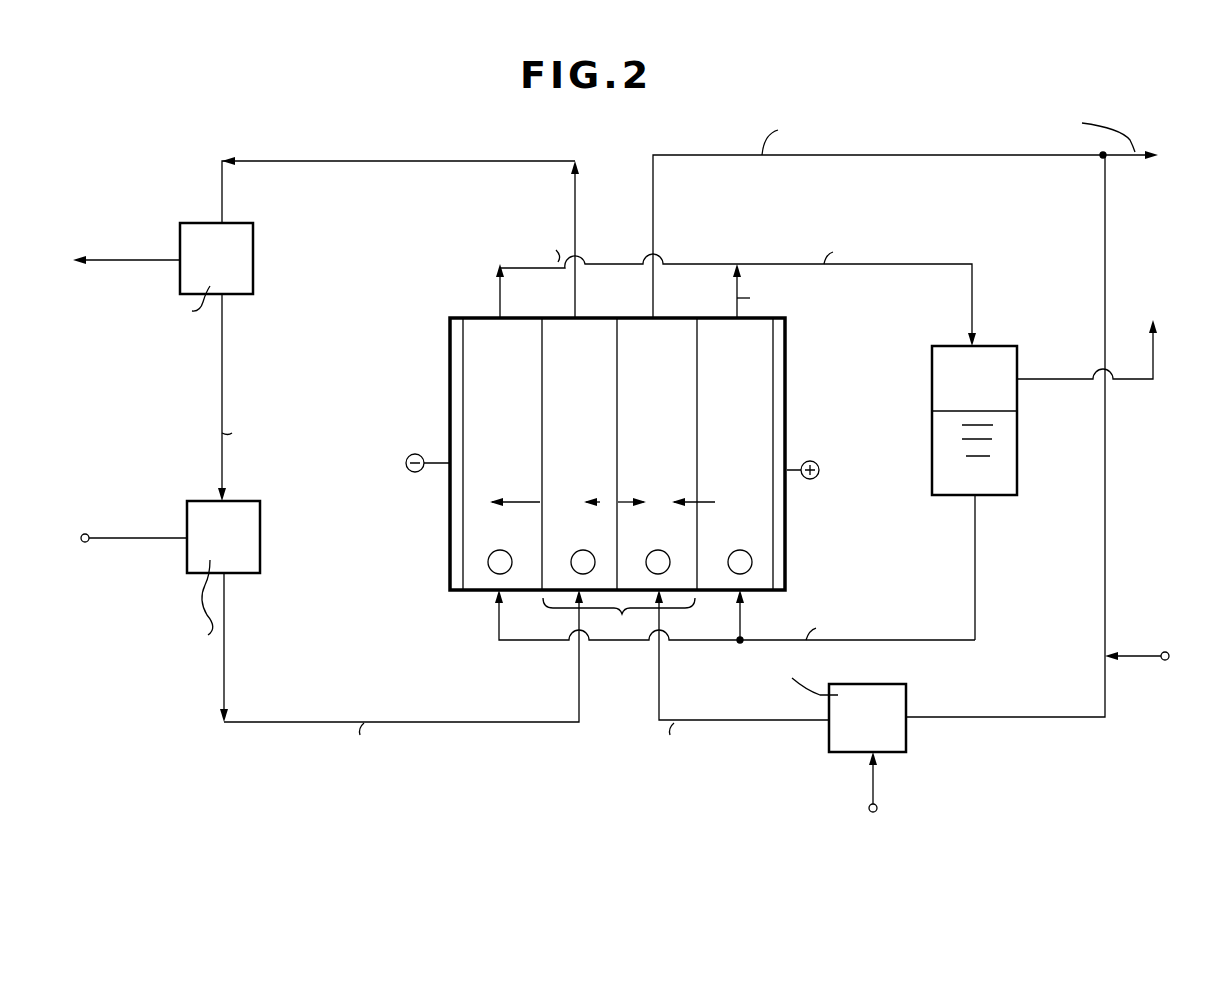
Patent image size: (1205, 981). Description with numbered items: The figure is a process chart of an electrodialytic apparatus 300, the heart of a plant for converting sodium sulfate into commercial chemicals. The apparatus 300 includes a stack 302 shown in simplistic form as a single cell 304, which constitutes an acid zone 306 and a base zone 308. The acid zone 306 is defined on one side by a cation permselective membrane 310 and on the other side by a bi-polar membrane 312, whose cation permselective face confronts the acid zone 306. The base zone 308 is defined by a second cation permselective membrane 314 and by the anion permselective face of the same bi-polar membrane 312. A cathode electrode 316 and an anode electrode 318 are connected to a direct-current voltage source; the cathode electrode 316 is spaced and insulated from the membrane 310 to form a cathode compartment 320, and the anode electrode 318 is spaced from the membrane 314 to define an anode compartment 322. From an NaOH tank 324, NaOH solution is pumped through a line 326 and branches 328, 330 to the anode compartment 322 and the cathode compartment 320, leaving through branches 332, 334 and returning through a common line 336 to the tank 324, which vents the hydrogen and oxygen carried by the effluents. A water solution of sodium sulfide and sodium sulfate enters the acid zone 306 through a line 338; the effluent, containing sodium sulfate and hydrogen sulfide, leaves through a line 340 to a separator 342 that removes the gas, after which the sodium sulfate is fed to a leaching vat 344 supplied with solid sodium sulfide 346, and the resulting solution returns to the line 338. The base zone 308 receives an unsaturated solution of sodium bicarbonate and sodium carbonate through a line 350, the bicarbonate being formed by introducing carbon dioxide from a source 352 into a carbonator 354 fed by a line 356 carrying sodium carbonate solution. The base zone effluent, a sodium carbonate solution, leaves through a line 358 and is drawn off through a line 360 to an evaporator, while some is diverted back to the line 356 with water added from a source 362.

The electrodialytic apparatus 300 is at (632, 152).
The stack 302 is at (787, 372).
The single cell 304 is at (619, 619).
The acid zone 306 is at (597, 414).
The base zone 308 is at (674, 414).
The cation permselective membrane 310 is at (542, 356).
The bi-polar membrane 312 is at (617, 344).
The second cation permselective membrane 314 is at (697, 350).
The cathode electrode 316 is at (450, 418).
The anode electrode 318 is at (787, 421).
The cathode compartment 320 is at (522, 414).
The anode compartment 322 is at (756, 414).
The NaOH tank 324 is at (1017, 466).
The line 326 is at (975, 580).
The branch 328 is at (743, 597).
The branch 330 is at (499, 630).
The branch 332 is at (500, 297).
The branch 334 is at (737, 282).
The common line 336 is at (792, 264).
The line 338 is at (552, 723).
The line 340 is at (575, 217).
The separator 342 is at (253, 256).
The leaching vat 344 is at (260, 540).
The solid Na2S 346 is at (86, 542).
The line 350 is at (659, 684).
The source of gaseous CO2 352 is at (877, 805).
The carbonator 354 is at (906, 690).
The line 356 is at (990, 717).
The line 358 is at (653, 217).
The line 360 is at (1110, 160).
The source of water 362 is at (1162, 660).